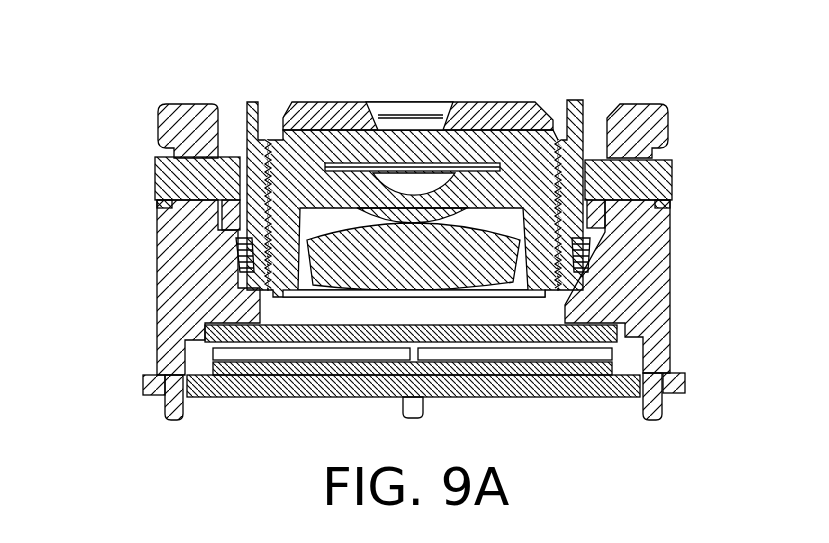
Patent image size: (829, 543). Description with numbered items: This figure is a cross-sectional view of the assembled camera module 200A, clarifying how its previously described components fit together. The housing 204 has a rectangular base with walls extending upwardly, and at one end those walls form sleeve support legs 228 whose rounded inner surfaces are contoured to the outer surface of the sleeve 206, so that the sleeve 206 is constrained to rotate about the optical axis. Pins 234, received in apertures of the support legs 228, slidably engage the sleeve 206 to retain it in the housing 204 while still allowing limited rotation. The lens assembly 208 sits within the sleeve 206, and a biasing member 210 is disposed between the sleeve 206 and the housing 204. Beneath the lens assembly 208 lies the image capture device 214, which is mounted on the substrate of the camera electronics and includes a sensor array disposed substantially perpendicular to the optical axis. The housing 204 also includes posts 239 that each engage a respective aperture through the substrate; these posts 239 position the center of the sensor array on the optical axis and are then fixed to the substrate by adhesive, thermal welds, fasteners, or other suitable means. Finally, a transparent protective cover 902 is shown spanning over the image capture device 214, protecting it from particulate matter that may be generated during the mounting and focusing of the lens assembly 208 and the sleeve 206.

The camera module 200A is at (745, 125).
The housing 204 is at (650, 241).
The sleeve 206 is at (250, 105).
The lens assembly 208 is at (525, 97).
The biasing member 210 is at (215, 262).
The image capture device 214 is at (345, 365).
The sleeve support legs 228 is at (163, 136).
The pins 234 is at (158, 168).
The posts 239 is at (178, 412).
The transparent protective cover 902 is at (560, 325).